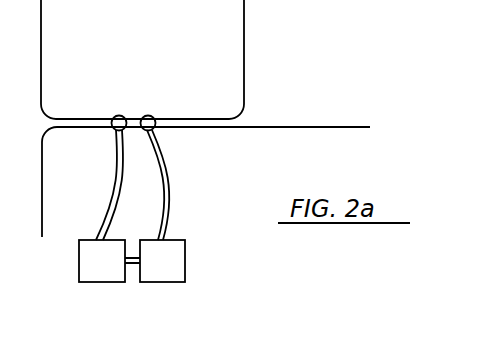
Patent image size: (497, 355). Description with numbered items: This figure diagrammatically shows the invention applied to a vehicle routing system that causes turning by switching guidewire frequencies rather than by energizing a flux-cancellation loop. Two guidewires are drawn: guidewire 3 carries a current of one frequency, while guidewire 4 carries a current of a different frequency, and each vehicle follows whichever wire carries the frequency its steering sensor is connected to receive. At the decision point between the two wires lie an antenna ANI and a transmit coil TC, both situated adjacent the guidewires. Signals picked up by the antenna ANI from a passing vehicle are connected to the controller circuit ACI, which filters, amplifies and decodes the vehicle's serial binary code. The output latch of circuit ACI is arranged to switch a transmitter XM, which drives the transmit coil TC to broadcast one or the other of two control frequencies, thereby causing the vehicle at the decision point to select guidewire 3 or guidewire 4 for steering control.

The guidewire 3 is at (41, 50).
The guidewire 4 is at (42, 196).
The transmit coil TC is at (148, 115).
The antenna ANI is at (116, 131).
The circuit ACI is at (109, 206).
The transmitter XM is at (162, 206).